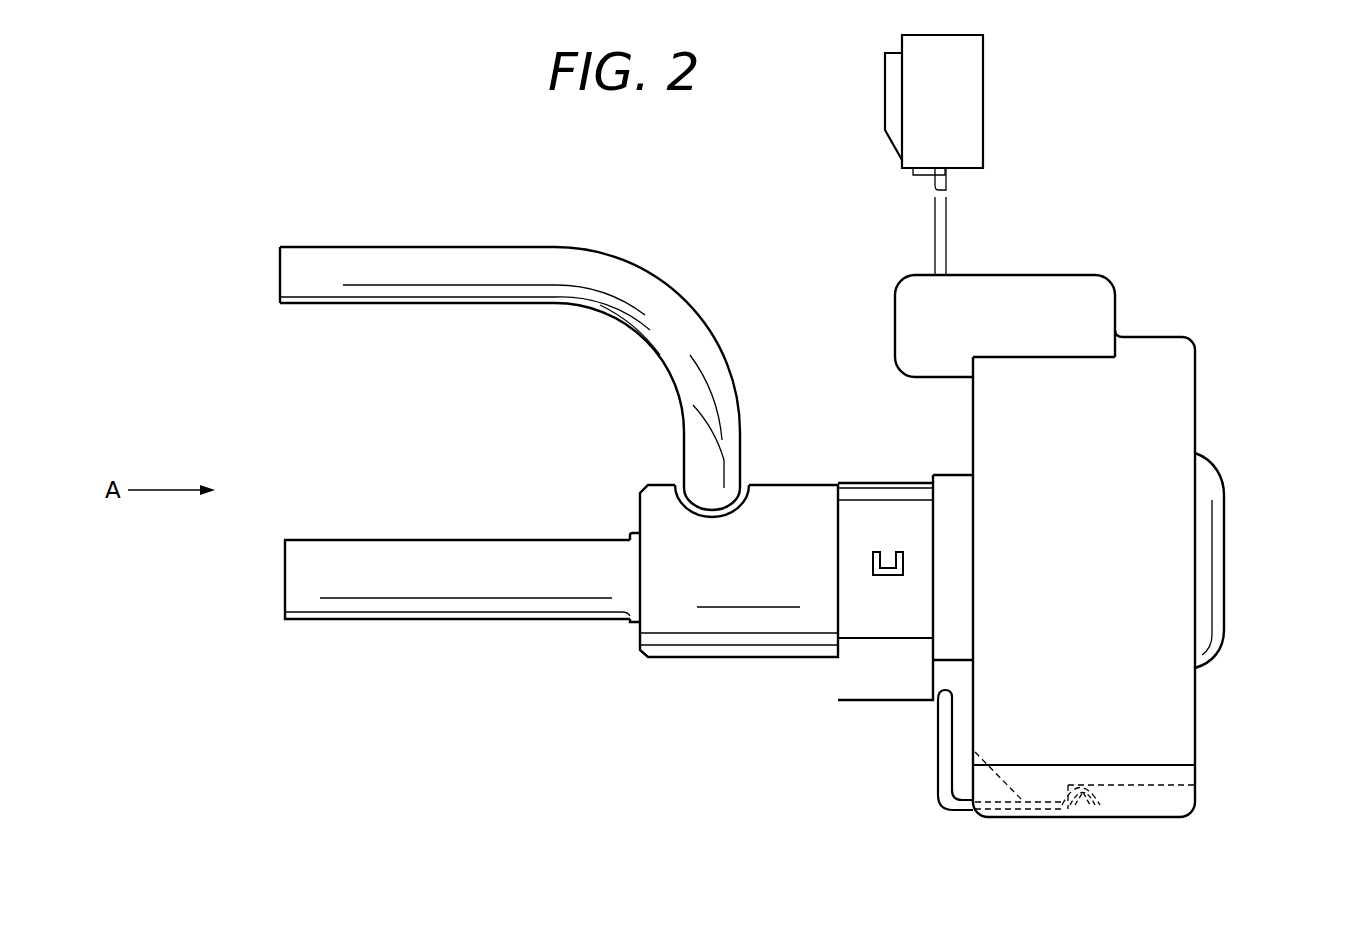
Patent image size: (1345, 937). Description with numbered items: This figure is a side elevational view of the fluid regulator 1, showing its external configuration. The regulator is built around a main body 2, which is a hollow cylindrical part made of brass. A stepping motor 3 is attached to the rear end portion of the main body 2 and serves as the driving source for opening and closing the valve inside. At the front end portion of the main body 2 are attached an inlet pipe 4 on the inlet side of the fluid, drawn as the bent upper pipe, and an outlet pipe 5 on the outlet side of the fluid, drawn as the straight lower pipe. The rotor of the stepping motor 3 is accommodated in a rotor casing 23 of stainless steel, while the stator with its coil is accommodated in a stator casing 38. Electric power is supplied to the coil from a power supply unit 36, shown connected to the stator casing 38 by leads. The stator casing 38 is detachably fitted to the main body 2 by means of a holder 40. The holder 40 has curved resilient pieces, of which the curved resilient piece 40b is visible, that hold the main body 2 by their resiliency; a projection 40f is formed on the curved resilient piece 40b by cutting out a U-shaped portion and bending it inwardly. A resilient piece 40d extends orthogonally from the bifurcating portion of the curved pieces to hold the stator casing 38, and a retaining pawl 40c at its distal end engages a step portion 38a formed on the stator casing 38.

The fluid regulator 1 is at (599, 681).
The main body 2 is at (738, 648).
The stepping motor 3 is at (1237, 383).
The inlet pipe 4 is at (376, 262).
The outlet pipe 5 is at (372, 607).
The rotor casing 23 is at (1224, 527).
The power supply unit 36 is at (973, 58).
The stator casing 38 is at (1185, 722).
The step portion 38a is at (1112, 805).
The holder 40 is at (865, 692).
The curved resilient piece 40b is at (860, 510).
The retaining pawl 40c is at (1083, 803).
The resilient piece 40d is at (938, 790).
The projection 40f is at (873, 565).